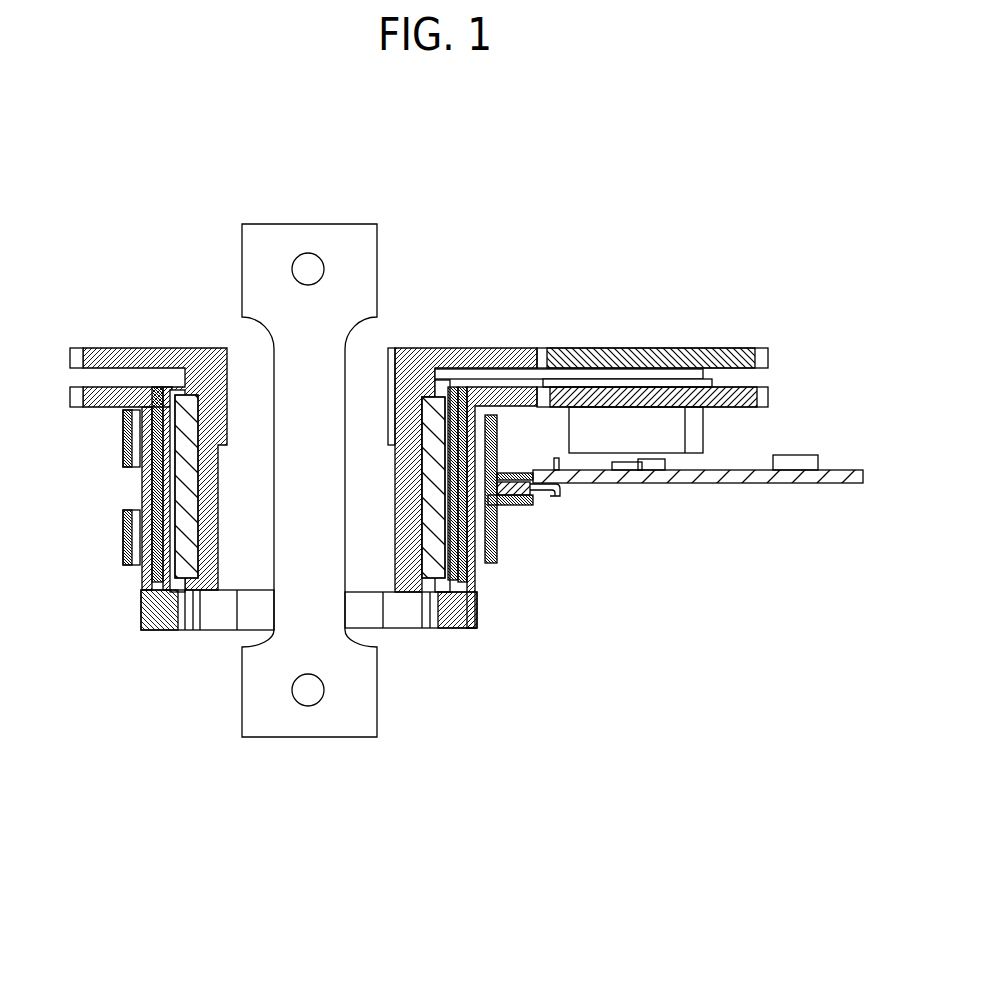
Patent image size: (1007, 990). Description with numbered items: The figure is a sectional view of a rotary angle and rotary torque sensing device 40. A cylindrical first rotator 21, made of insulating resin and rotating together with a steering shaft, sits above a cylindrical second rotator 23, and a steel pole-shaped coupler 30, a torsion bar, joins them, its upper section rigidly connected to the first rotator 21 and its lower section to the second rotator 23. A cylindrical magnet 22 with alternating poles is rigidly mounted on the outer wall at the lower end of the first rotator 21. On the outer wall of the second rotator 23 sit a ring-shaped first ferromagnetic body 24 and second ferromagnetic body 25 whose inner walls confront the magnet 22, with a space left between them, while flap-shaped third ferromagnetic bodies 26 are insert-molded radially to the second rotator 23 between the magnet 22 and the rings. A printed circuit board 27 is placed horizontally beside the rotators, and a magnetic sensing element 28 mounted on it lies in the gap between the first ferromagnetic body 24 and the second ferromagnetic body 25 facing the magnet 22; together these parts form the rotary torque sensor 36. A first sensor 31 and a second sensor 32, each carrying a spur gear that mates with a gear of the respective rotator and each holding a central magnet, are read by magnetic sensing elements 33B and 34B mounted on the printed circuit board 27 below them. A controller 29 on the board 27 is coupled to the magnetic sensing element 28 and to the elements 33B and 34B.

The first rotator 21 is at (138, 348).
The magnet 22 is at (435, 550).
The second rotator 23 is at (142, 612).
The first ferromagnetic body 24 is at (500, 506).
The second ferromagnetic body 25 is at (492, 562).
The third ferromagnetic body 26 is at (465, 570).
The printed circuit board 27 is at (813, 485).
The magnetic sensing element 28 is at (504, 503).
The controller 29 is at (808, 462).
The coupler 30 is at (300, 450).
The first sensor 31 is at (720, 348).
The second sensor 32 is at (768, 395).
The magnetic sensing element 33B is at (653, 463).
The magnetic sensing element 34B is at (625, 470).
The rotary torque sensor 36 is at (498, 571).
The rotary angle and rotary torque sensing device 40 is at (678, 829).